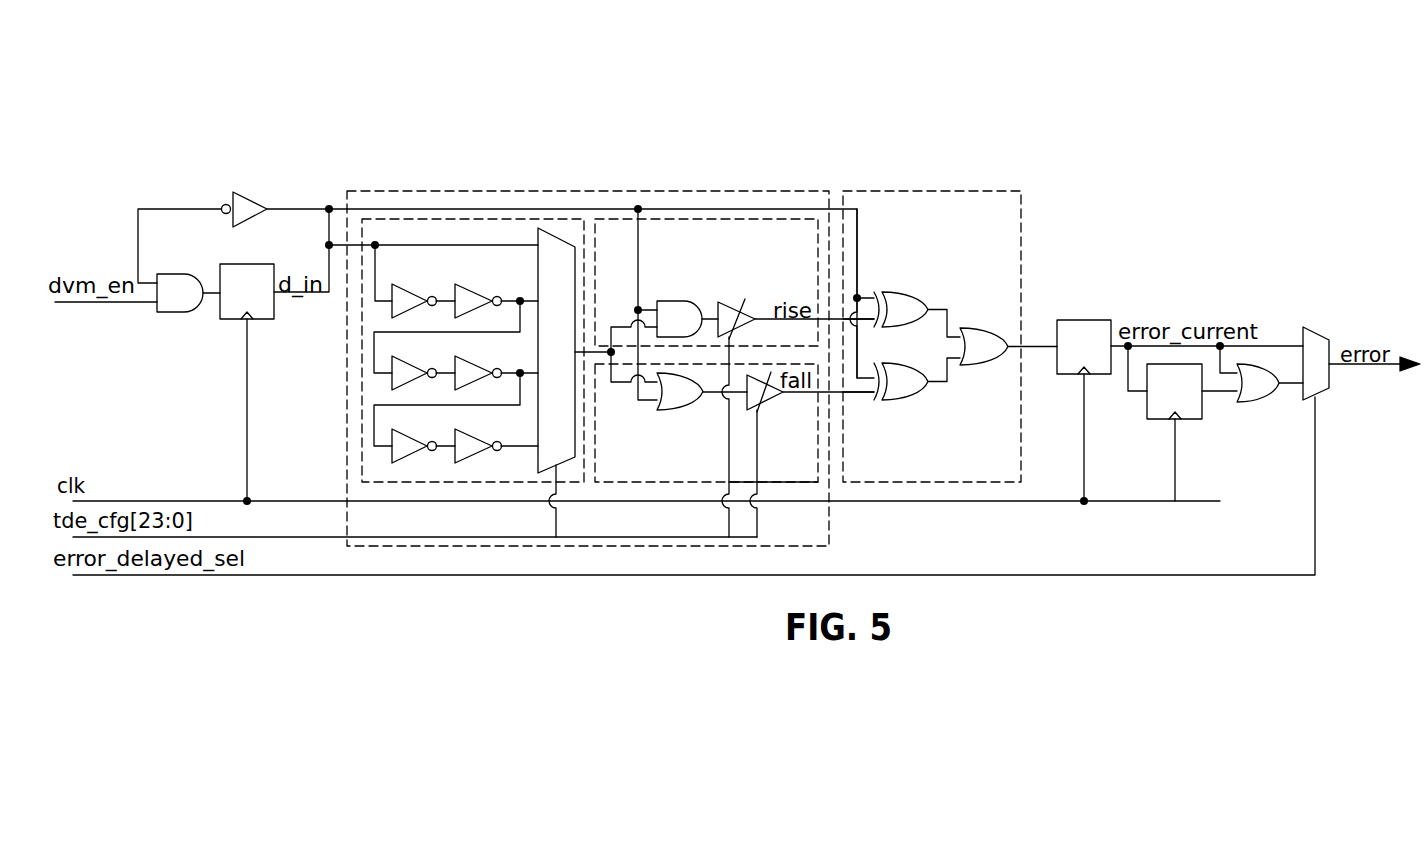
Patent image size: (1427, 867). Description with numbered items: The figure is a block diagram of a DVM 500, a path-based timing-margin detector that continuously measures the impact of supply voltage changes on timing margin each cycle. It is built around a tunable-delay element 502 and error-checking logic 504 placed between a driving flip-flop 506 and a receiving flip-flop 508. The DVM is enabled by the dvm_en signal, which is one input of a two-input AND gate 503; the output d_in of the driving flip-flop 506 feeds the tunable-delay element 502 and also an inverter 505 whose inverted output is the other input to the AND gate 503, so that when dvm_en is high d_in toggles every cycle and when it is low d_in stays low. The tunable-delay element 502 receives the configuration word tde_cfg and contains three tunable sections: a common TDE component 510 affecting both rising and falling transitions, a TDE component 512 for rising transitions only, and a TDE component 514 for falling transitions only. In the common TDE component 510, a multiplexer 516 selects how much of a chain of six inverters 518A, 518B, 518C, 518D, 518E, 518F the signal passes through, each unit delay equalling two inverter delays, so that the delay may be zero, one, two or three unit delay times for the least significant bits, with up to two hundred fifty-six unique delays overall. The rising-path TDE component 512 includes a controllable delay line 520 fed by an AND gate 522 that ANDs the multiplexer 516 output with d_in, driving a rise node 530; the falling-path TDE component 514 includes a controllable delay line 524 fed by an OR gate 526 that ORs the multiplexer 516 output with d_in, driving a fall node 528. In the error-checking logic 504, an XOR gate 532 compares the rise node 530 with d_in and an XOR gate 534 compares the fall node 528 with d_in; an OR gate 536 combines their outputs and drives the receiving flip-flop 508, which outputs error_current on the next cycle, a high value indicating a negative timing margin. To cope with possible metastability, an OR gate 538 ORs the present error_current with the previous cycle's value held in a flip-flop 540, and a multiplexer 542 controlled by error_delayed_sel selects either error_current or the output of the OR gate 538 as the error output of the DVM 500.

The DVM 500 is at (233, 105).
The tunable-delay element 502 is at (601, 191).
The AND gate 503 is at (165, 275).
The error-checking logic 504 is at (897, 191).
The inverter 505 is at (257, 194).
The driving flip-flop 506 is at (238, 264).
The receiving flip-flop 508 is at (1087, 320).
The common TDE component 510 is at (443, 218).
The TDE component for rising transitions 512 is at (766, 218).
The TDE component for falling transitions 514 is at (778, 482).
The multiplexer 516 is at (557, 232).
The inverter 518A is at (397, 284).
The inverter 518B is at (462, 284).
The inverter 518C is at (397, 356).
The inverter 518D is at (462, 356).
The inverter 518E is at (397, 429).
The inverter 518F is at (462, 429).
The controllable delay line 520 is at (731, 302).
The AND gate 522 is at (667, 301).
The controllable delay line 524 is at (764, 410).
The OR gate 526 is at (671, 410).
The fall node 528 is at (860, 396).
The rise node 530 is at (863, 321).
The XOR gate 532 is at (887, 292).
The XOR gate 534 is at (917, 401).
The OR gate 536 is at (967, 328).
The OR gate 538 is at (1255, 402).
The flip-flop 540 is at (1147, 412).
The multiplexer 542 is at (1318, 329).